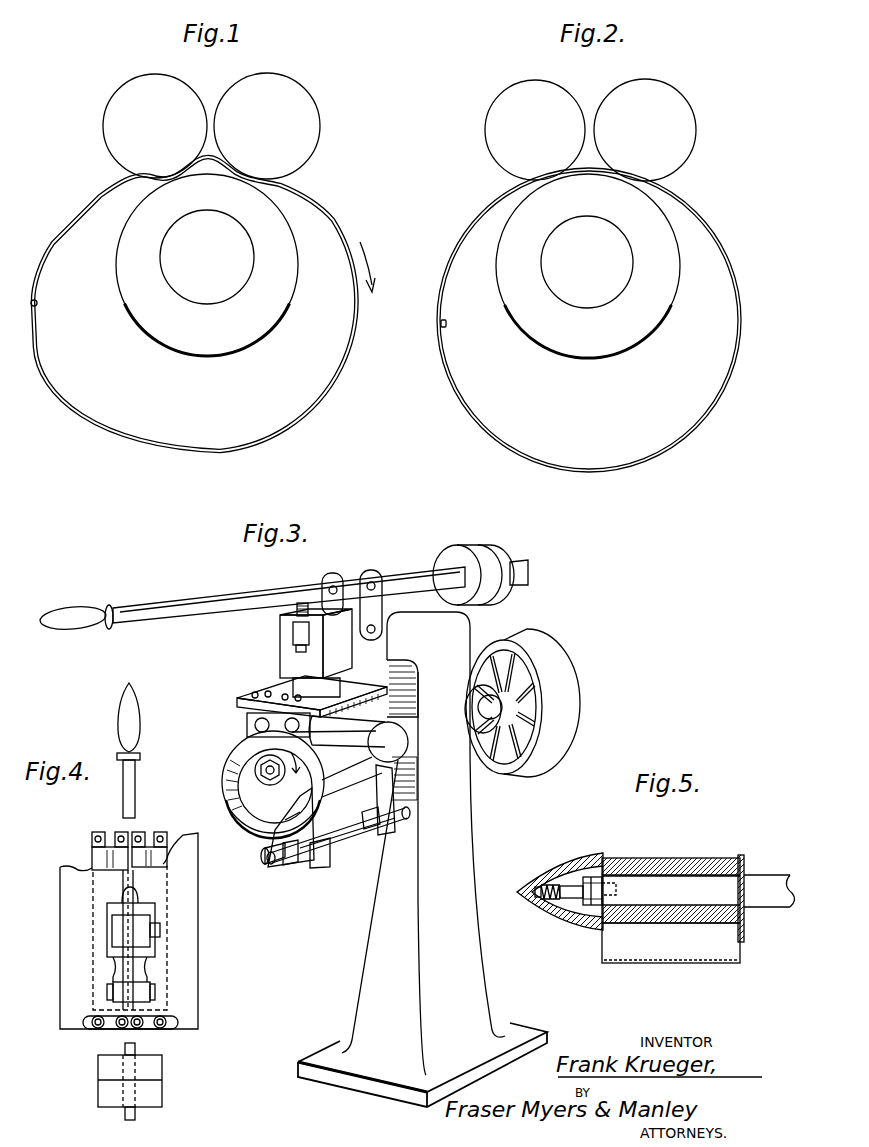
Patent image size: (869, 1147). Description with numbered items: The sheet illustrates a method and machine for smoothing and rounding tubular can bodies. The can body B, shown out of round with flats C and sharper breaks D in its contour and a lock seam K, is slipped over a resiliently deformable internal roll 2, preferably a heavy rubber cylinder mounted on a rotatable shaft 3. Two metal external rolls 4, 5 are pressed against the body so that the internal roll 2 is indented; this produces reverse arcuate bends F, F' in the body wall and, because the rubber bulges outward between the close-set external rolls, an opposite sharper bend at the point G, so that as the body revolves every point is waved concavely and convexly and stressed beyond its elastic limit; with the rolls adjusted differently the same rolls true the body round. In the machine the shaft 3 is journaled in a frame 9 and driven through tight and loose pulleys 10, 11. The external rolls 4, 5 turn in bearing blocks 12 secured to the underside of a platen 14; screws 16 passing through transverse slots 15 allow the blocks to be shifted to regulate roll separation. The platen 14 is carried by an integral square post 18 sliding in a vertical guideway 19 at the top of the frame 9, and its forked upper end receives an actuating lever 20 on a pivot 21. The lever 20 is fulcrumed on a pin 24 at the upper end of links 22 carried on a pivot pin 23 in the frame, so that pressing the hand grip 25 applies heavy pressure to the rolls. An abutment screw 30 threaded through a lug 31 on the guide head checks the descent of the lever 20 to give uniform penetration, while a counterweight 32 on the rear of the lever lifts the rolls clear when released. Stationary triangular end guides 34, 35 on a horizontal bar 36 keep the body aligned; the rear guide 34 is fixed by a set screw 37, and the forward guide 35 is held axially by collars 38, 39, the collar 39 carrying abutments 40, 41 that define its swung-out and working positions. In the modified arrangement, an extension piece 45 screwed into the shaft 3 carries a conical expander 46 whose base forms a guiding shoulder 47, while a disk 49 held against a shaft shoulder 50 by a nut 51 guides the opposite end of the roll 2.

In FIG. 1, the internal roll 2 is at (264, 330).
In FIG. 2, the internal roll 2 is at (630, 349).
In FIG. 3, the internal roll 2 is at (268, 800).
In FIG. 5, the internal roll 2 is at (700, 858).
In FIG. 1, the shaft 3 is at (252, 262).
In FIG. 2, the shaft 3 is at (626, 246).
In FIG. 3, the shaft 3 is at (406, 750).
In FIG. 5, the shaft 3 is at (720, 882).
In FIG. 1, the external roll 4 is at (155, 126).
In FIG. 2, the external roll 4 is at (535, 130).
In FIG. 4, the external roll 4 is at (146, 846).
In FIG. 1, the external roll 5 is at (267, 126).
In FIG. 2, the external roll 5 is at (645, 130).
In FIG. 3, the external roll 5 is at (337, 728).
In FIG. 4, the external roll 5 is at (92, 855).
In FIG. 3, the frame 9 is at (422, 859).
In FIG. 3, the tight pulley 10 is at (542, 664).
In FIG. 3, the loose pulley 11 is at (575, 696).
In FIG. 3, the bearing blocks 12 is at (249, 722).
In FIG. 4, the bearing blocks 12 is at (140, 831).
In FIG. 3, the platen 14 is at (240, 704).
In FIG. 4, the platen 14 is at (166, 972).
In FIG. 3, the transverse slot 15 is at (284, 694).
In FIG. 4, the transverse slot 15 is at (174, 1028).
In FIG. 3, the screws 16 is at (255, 692).
In FIG. 4, the screws 16 is at (165, 1020).
In FIG. 3, the upright post 18 is at (294, 684).
In FIG. 4, the upright post 18 is at (142, 922).
In FIG. 3, the vertical guideway 19 is at (352, 648).
In FIG. 4, the vertical guideway 19 is at (136, 910).
In FIG. 3, the actuating lever 20 is at (186, 604).
In FIG. 4, the actuating lever 20 is at (136, 786).
In FIG. 3, the pivot 21 is at (332, 585).
In FIG. 4, the pivot 21 is at (160, 928).
In FIG. 3, the links 22 is at (368, 570).
In FIG. 3, the pivot pin 23 is at (382, 631).
In FIG. 4, the pivot pin 23 is at (106, 990).
In FIG. 3, the fulcrum pin 24 is at (376, 583).
In FIG. 3, the hand grip 25 is at (80, 615).
In FIG. 4, the hand grip 25 is at (119, 714).
In FIG. 3, the abutment screw 30 is at (296, 610).
In FIG. 3, the lug 31 is at (310, 632).
In FIG. 4, the lug 31 is at (121, 900).
In FIG. 3, the counterweight 32 is at (470, 548).
In FIG. 4, the counterweight 32 is at (110, 1072).
In FIG. 3, the rear end guide 34 is at (354, 836).
In FIG. 3, the forward end guide 35 is at (320, 792).
In FIG. 3, the horizontal bar 36 is at (342, 850).
In FIG. 3, the set screw 37 is at (392, 838).
In FIG. 3, the collar 38 is at (290, 866).
In FIG. 3, the collar 39 is at (303, 868).
In FIG. 3, the abutment 40 is at (318, 868).
In FIG. 3, the abutment 41 is at (262, 852).
In FIG. 5, the extension piece 45 is at (566, 883).
In FIG. 5, the conical expander 46 is at (556, 904).
In FIG. 5, the shoulder 47 is at (606, 861).
In FIG. 5, the disk 49 is at (746, 865).
In FIG. 5, the shoulder 50 is at (768, 882).
In FIG. 5, the nut 51 is at (590, 910).
In FIG. 1, the can body B is at (328, 230).
In FIG. 2, the can body B is at (725, 262).
In FIG. 3, the can body B is at (228, 792).
In FIG. 5, the can body B is at (740, 958).
In FIG. 1, the flats C is at (96, 210).
In FIG. 1, the breaks D is at (78, 244).
In FIG. 1, the arcuate bend F is at (168, 200).
In FIG. 1, the arcuate bend F' is at (251, 196).
In FIG. 1, the bend point G is at (208, 165).
In FIG. 1, the lock seam K is at (37, 303).